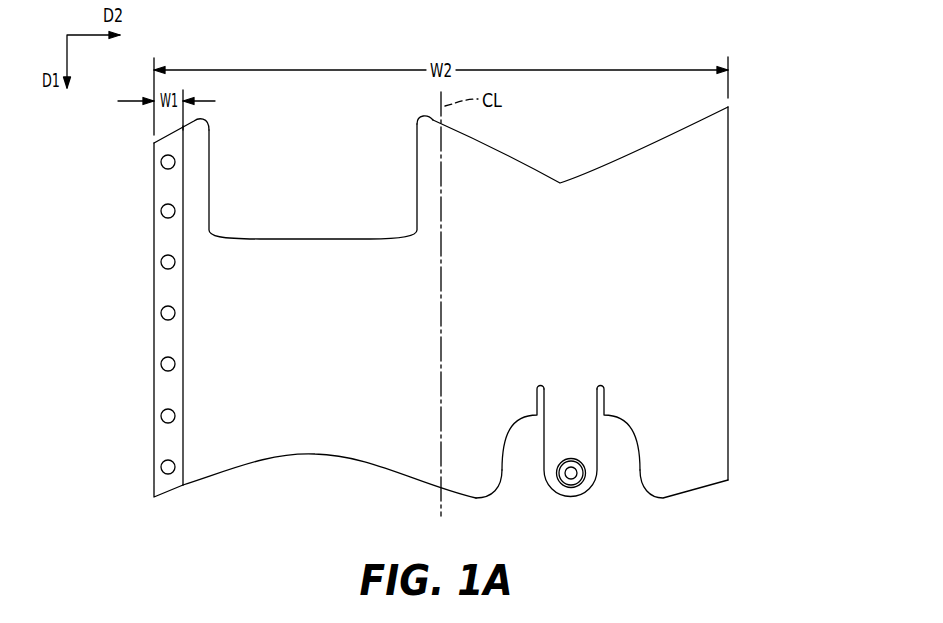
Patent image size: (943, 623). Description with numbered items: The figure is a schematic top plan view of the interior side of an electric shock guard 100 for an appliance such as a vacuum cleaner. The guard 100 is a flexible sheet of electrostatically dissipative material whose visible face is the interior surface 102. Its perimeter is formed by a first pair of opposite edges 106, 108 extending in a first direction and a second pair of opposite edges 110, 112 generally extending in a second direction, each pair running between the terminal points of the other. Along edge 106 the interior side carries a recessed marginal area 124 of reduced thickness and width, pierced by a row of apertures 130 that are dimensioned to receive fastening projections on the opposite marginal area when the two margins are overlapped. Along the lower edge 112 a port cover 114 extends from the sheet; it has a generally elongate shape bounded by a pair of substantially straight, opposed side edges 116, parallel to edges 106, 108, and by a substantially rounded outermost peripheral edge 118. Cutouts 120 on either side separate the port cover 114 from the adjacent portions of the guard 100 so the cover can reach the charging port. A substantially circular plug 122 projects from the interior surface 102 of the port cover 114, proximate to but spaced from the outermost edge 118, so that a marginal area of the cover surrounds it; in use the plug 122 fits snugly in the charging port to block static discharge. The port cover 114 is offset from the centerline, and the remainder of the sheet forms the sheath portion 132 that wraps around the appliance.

The electric shock guard 100 is at (758, 93).
The interior surface 102 is at (447, 320).
The first edge 106 is at (154, 297).
The second edge 108 is at (728, 293).
The third edge 110 is at (312, 228).
The fourth edge 112 is at (312, 468).
The port cover 114 is at (570, 448).
The side edges 116 is at (543, 435).
The outermost peripheral edge 118 is at (572, 497).
The cutouts 120 is at (521, 490).
The plug 122 is at (581, 478).
The recessed marginal area 124 is at (168, 441).
The apertures 130 is at (161, 211).
The sheath portion 132 is at (570, 203).